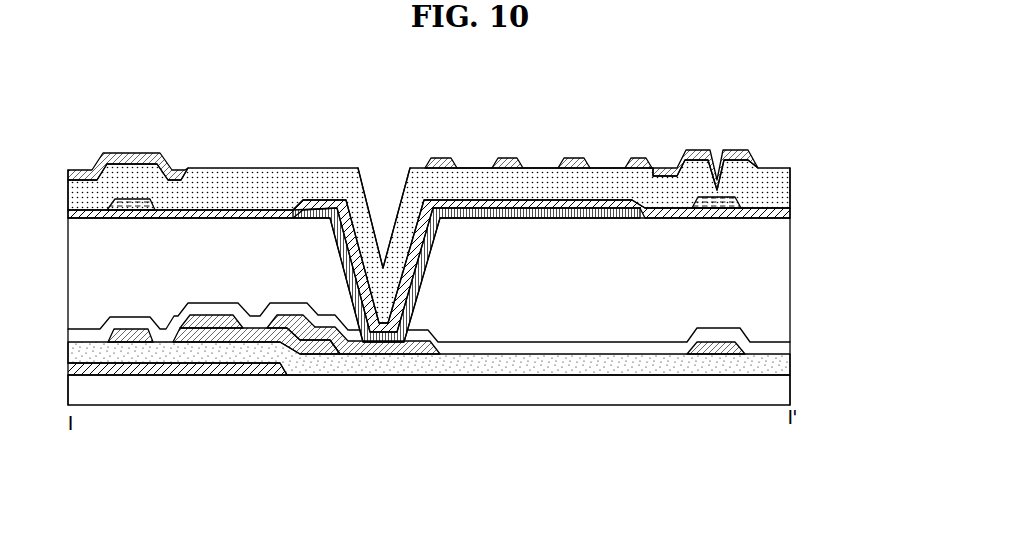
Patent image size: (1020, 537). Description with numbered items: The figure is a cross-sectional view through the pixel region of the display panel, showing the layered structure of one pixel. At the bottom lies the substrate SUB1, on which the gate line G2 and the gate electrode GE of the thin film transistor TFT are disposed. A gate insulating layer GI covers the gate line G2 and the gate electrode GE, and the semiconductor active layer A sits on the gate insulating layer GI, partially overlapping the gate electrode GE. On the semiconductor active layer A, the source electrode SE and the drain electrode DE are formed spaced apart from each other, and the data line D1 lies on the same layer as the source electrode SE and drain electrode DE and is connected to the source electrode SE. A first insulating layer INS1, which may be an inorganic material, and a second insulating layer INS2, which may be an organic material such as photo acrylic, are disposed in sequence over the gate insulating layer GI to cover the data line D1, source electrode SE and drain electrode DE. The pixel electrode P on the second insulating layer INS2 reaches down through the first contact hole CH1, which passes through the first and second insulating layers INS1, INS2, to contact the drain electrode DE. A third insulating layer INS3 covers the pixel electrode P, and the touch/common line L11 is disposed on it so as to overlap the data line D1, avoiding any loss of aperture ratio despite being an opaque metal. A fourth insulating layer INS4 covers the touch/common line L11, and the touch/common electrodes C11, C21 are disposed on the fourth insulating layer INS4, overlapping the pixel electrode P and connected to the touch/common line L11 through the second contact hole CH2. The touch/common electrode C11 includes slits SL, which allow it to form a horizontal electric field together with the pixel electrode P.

The substrate SUB1 is at (483, 393).
The gate line G2 is at (100, 368).
The gate electrode GE is at (252, 370).
The gate insulating layer GI is at (567, 368).
The data line D1 is at (138, 347).
The semiconductor active layer A is at (308, 350).
The source electrode SE is at (195, 328).
The drain electrode DE is at (353, 390).
The thin film transistor TFT is at (306, 409).
The first insulating layer INS1 is at (790, 347).
The second insulating layer INS2 is at (790, 276).
The third insulating layer INS3 is at (790, 215).
The fourth insulating layer INS4 is at (790, 186).
The pixel electrode P is at (322, 212).
The first contact hole CH1 is at (383, 190).
The second contact hole CH2 is at (715, 158).
The touch/common line L11 is at (128, 202).
The touch/common electrode C21 is at (175, 172).
The touch/common electrode C11 is at (437, 162).
The slit SL is at (470, 162).